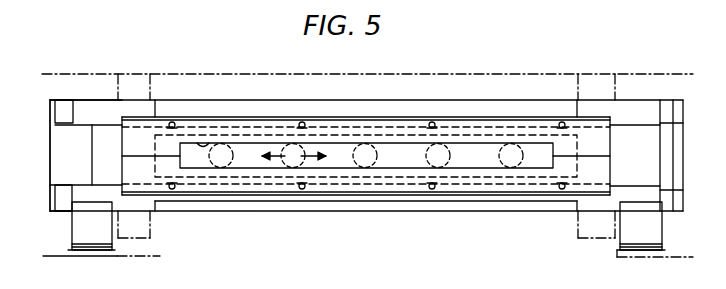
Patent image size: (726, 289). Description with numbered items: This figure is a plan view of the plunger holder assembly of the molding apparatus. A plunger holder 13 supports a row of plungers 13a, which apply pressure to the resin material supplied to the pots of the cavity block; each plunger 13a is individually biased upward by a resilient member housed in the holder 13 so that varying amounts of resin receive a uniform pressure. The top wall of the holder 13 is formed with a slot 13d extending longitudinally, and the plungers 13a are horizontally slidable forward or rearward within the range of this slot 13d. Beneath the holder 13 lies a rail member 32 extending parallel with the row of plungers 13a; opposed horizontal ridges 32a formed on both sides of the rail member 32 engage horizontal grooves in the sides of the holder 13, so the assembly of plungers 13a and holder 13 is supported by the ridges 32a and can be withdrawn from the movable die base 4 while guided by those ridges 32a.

The movable die base 4 is at (80, 75).
The plunger holder 13 is at (612, 162).
The plungers 13a is at (288, 150).
The slot 13d is at (203, 142).
The rail member 32 is at (48, 156).
The horizontal ridges 32a is at (119, 120).